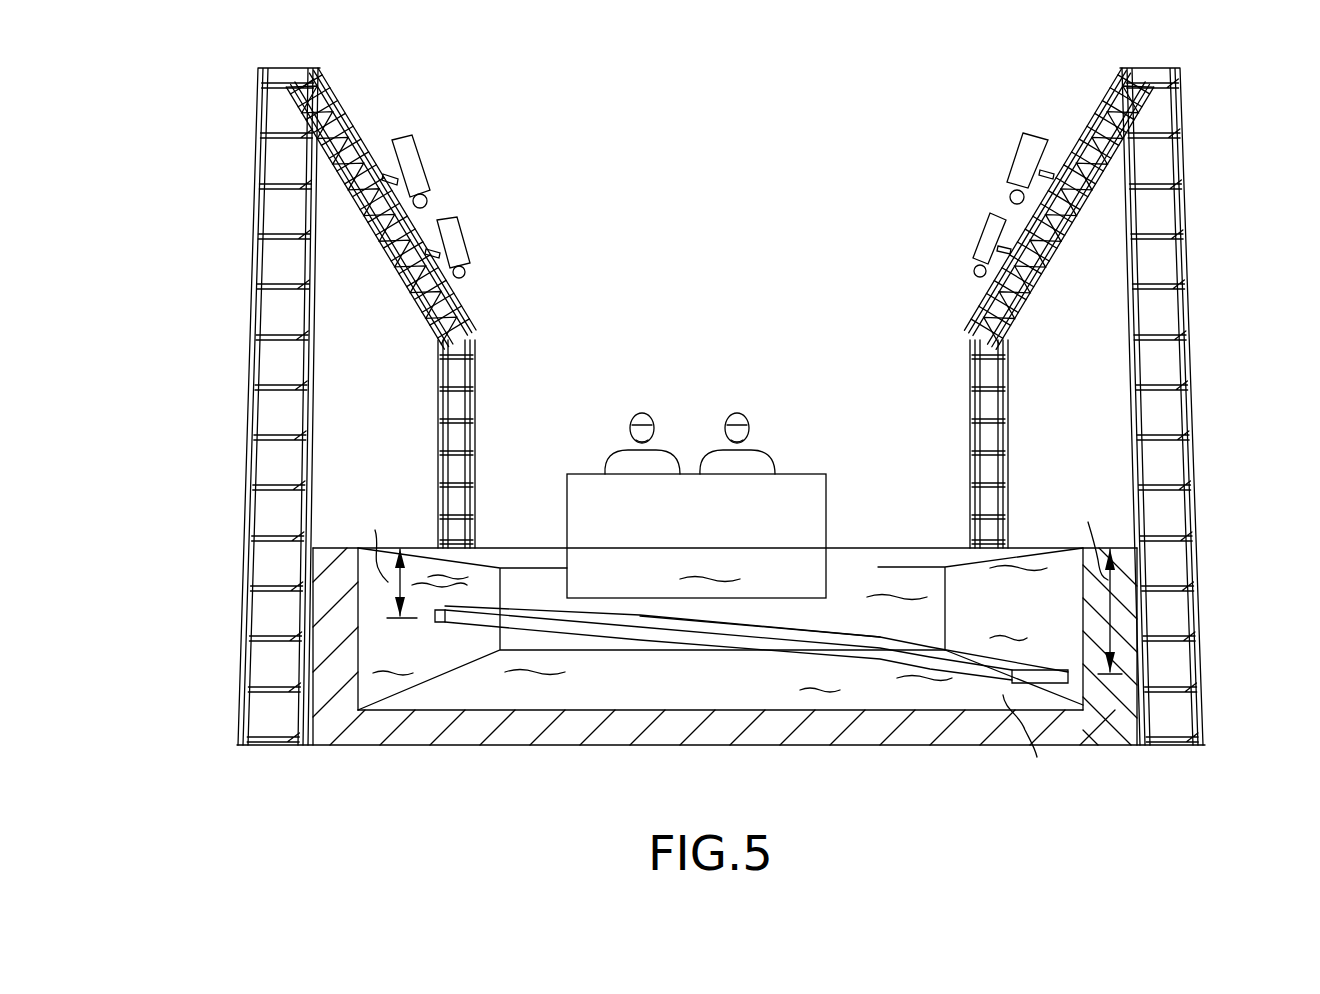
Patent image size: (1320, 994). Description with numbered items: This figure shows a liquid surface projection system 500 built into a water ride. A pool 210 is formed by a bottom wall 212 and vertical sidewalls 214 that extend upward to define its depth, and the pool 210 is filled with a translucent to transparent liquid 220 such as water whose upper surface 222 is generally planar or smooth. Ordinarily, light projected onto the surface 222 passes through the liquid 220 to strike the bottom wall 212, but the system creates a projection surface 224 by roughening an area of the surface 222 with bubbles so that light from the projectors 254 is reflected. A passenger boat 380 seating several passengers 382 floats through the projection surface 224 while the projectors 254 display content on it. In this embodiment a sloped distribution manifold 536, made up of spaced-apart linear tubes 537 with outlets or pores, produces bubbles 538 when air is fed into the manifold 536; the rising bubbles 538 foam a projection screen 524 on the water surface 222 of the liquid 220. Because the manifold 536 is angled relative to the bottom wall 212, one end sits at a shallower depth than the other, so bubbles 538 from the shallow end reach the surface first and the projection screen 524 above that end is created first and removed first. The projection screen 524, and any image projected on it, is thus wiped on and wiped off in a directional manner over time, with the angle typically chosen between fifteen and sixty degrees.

The liquid surface projection system 500 is at (1222, 90).
The projectors 254 is at (443, 213).
The passengers 382 is at (722, 422).
The passenger boat 380 is at (795, 470).
The bubbles 538 is at (513, 578).
The projection surface 224 is at (868, 563).
The projection screen 524 is at (945, 548).
The upper surface 222 is at (318, 548).
The sidewalls 214 is at (330, 676).
The liquid 220 is at (492, 702).
The bottom wall 212 is at (440, 735).
The tubes 537 is at (678, 637).
The sloped distribution manifold 536 is at (878, 674).
The pool 210 is at (352, 760).